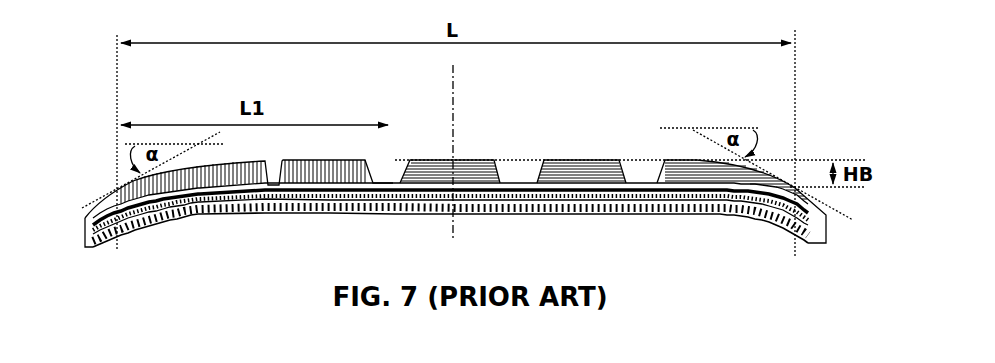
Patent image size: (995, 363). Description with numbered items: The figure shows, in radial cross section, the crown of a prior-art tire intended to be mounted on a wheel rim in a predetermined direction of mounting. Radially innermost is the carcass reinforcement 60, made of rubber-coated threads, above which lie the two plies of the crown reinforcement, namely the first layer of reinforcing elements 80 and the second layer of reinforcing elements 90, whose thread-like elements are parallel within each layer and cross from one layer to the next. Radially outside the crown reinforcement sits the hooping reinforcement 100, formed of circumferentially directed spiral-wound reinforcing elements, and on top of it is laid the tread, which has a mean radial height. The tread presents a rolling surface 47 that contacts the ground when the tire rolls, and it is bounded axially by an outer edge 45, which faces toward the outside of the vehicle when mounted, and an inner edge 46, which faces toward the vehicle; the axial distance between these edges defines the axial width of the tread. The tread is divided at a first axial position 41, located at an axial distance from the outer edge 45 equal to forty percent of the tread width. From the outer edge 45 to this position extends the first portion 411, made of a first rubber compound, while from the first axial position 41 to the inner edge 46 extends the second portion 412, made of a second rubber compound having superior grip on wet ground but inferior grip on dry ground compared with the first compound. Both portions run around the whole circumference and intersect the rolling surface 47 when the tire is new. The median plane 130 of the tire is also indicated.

The first axial position 41 is at (392, 240).
The first portion 411 is at (302, 170).
The rolling surface 47 is at (469, 155).
The second portion 412 is at (584, 170).
The outer edge 45 is at (112, 184).
The inner edge 46 is at (797, 183).
The carcass reinforcement 60 is at (138, 222).
The first layer of reinforcing elements 80 is at (227, 218).
The second layer of reinforcing elements 90 is at (280, 210).
The hooping reinforcement 100 is at (333, 210).
The median plane 130 is at (455, 233).